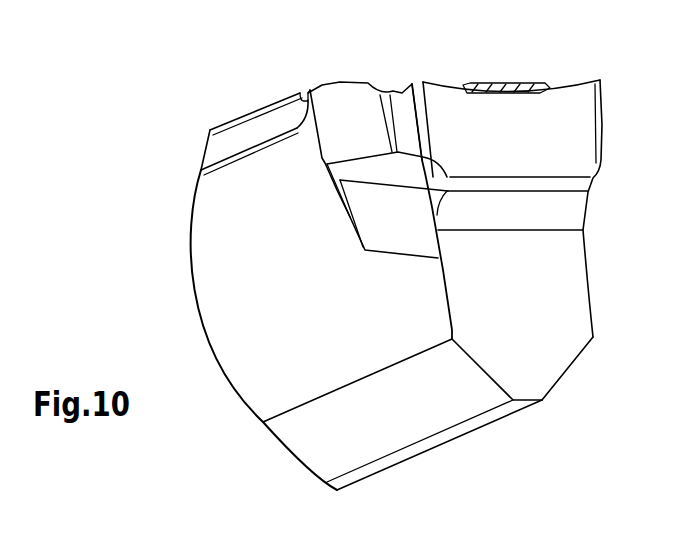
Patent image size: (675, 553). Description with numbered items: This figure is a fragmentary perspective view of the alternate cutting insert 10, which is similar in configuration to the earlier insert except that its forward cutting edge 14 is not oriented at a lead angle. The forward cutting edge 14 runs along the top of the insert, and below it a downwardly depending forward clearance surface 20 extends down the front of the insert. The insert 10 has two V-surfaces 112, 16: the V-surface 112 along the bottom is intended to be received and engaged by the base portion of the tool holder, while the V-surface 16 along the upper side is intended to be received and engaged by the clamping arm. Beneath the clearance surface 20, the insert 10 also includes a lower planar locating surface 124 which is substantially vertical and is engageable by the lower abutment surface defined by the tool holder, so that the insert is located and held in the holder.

The cutting insert 10 is at (150, 270).
The forward cutting edge 14 is at (532, 83).
The V-surface 16 is at (251, 128).
The forward clearance surface 20 is at (513, 148).
The V-surface 112 is at (402, 430).
The lower planar locating surface 124 is at (547, 310).